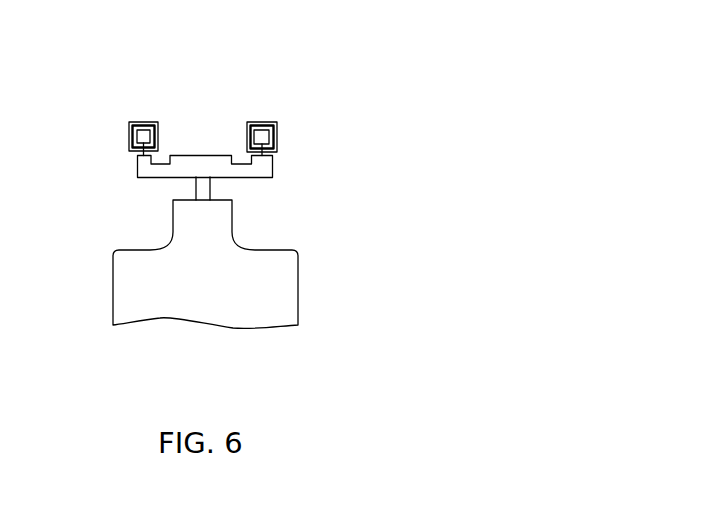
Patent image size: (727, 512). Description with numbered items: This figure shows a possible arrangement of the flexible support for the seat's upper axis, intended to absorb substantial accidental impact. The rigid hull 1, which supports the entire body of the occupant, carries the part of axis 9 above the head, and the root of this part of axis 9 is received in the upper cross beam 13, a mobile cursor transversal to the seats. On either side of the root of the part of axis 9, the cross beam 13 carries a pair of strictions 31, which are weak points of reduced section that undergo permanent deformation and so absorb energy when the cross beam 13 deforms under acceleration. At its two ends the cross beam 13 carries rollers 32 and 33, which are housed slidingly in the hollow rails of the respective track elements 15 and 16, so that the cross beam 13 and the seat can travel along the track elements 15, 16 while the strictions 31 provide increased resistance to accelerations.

The hull 1 is at (272, 250).
The part of axis 9 is at (200, 186).
The upper cross beam 13 is at (273, 168).
The track element 15 is at (130, 123).
The track element 16 is at (277, 140).
The striction 31 is at (162, 162).
The roller 32 is at (142, 142).
The roller 33 is at (262, 140).